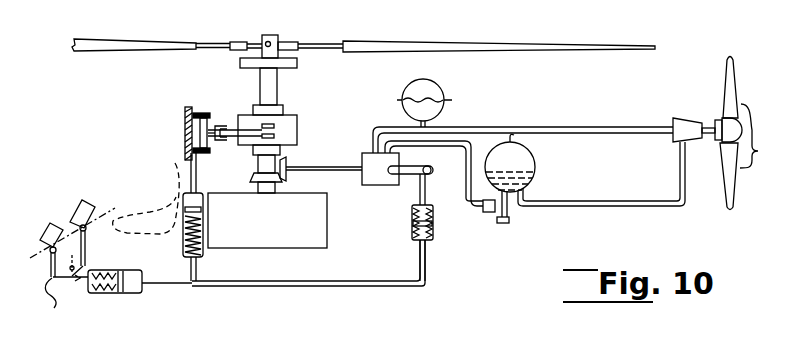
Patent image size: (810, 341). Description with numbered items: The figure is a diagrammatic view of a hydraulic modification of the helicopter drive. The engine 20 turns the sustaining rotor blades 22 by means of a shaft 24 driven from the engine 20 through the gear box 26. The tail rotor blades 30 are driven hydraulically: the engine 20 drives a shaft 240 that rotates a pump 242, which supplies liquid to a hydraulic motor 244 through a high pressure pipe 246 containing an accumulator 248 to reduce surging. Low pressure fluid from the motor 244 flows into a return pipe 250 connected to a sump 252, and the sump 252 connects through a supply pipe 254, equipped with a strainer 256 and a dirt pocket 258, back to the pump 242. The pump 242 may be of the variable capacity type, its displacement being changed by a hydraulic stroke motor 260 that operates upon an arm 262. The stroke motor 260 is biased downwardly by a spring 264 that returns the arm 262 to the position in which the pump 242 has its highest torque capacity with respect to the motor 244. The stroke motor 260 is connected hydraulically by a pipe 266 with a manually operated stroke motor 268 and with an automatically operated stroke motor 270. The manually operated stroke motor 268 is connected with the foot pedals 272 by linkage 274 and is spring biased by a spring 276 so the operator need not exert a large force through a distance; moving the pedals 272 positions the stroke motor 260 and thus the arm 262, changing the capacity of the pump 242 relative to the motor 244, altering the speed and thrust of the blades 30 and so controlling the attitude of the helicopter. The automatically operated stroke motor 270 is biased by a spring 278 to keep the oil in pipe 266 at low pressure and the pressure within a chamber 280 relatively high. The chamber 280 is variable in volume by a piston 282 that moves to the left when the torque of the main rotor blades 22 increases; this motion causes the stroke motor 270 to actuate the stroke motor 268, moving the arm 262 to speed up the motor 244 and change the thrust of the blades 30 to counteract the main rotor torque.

The engine 20 is at (276, 234).
The sustaining rotor blades 22 is at (138, 38).
The shaft 24 is at (278, 96).
The gear box 26 is at (298, 124).
The tail rotor blades 30 is at (753, 133).
The shaft 240 is at (330, 172).
The pump 242 is at (365, 153).
The hydraulic motor 244 is at (690, 118).
The high pressure pipe 246 is at (488, 127).
The accumulator 248 is at (440, 88).
The return pipe 250 is at (630, 208).
The sump 252 is at (535, 166).
The supply pipe 254 is at (466, 190).
The strainer 256 is at (489, 213).
The dirt pocket 258 is at (510, 220).
The hydraulic stroke motor 260 is at (410, 241).
The arm 262 is at (402, 176).
The spring 264 is at (433, 220).
The pipe 266 is at (300, 286).
The manually operated stroke motor 268 is at (96, 305).
The automatically operated stroke motor 270 is at (176, 213).
The foot pedals 272 is at (50, 248).
The linkage 274 is at (58, 296).
The spring 276 is at (110, 293).
The spring 278 is at (183, 250).
The chamber 280 is at (192, 112).
The piston 282 is at (215, 131).